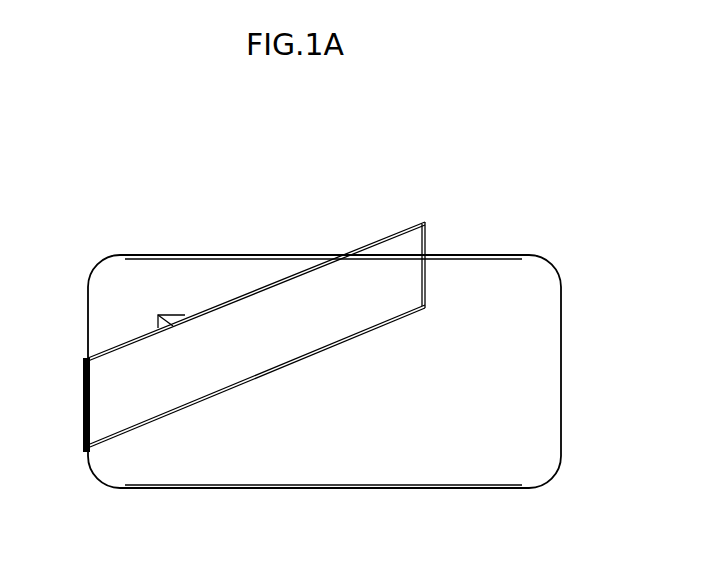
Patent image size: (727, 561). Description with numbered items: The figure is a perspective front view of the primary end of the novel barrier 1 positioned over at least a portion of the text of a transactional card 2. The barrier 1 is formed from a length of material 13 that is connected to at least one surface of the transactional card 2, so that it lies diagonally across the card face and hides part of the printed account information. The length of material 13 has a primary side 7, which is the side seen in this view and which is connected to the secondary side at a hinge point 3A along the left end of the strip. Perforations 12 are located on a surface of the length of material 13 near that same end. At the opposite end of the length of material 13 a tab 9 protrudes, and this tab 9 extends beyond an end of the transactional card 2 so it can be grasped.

The barrier 1 is at (273, 308).
The transactional card 2 is at (561, 281).
The hinge point 3A is at (83, 372).
The primary side 7 is at (325, 278).
The tab 9 is at (417, 252).
The perforations 12 is at (86, 418).
The length of material 13 is at (133, 403).